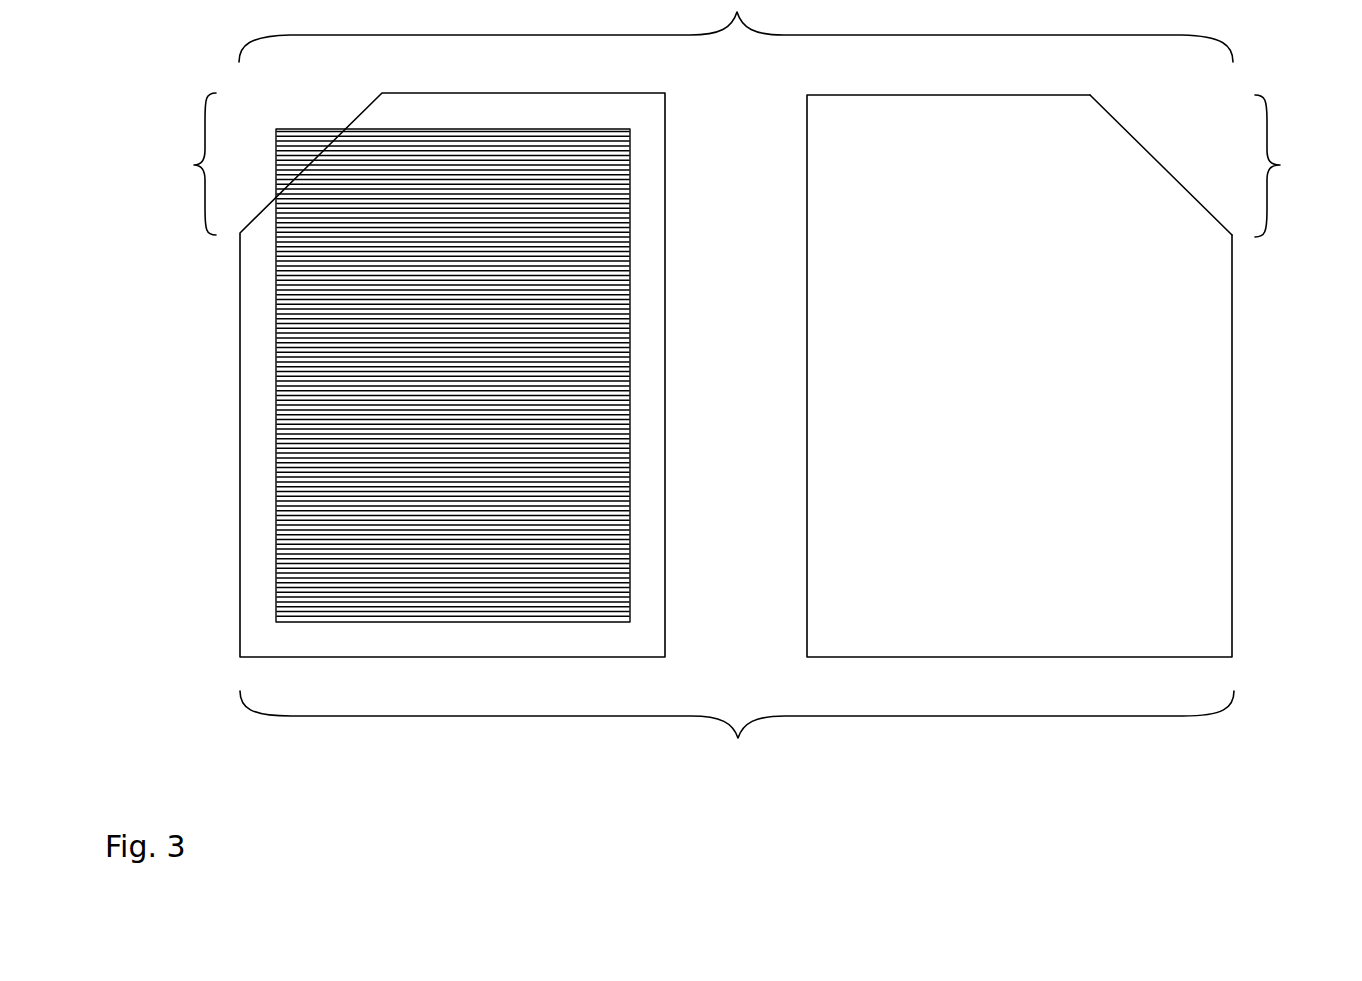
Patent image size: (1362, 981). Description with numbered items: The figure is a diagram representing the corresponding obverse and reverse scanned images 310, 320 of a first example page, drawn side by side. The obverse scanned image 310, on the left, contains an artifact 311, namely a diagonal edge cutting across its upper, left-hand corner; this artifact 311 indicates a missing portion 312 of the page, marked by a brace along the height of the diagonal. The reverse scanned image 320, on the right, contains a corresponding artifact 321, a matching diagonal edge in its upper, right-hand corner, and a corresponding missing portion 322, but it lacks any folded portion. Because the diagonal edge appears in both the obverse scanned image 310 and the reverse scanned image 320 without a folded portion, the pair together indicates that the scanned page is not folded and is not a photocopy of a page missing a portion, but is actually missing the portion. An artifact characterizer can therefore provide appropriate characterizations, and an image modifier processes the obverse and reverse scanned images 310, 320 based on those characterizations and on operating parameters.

The obverse scanned image 310 is at (665, 303).
The artifact 311 is at (345, 131).
The missing portion 312 is at (183, 164).
The reverse scanned image 320 is at (1232, 305).
The corresponding artifact 321 is at (1128, 130).
The missing portion 322 is at (1288, 166).